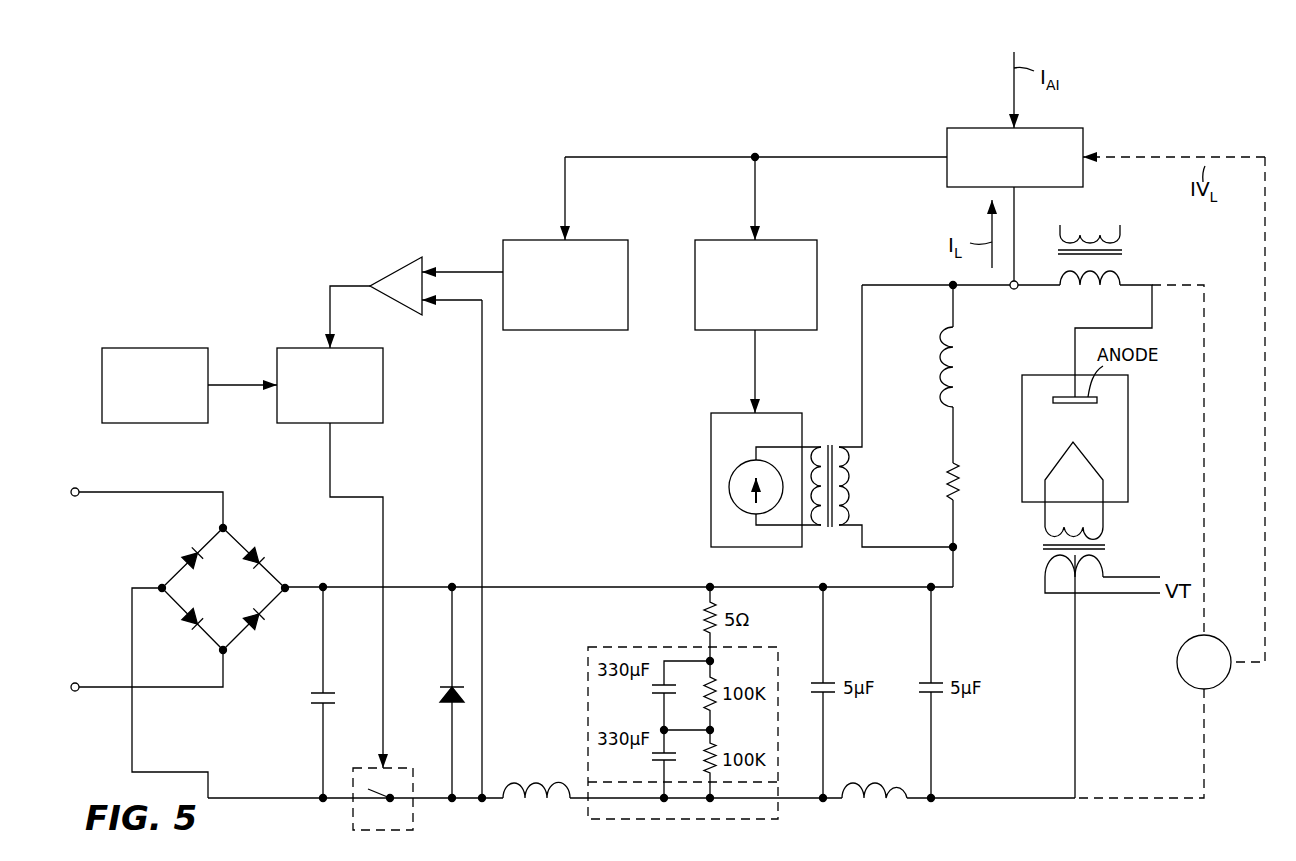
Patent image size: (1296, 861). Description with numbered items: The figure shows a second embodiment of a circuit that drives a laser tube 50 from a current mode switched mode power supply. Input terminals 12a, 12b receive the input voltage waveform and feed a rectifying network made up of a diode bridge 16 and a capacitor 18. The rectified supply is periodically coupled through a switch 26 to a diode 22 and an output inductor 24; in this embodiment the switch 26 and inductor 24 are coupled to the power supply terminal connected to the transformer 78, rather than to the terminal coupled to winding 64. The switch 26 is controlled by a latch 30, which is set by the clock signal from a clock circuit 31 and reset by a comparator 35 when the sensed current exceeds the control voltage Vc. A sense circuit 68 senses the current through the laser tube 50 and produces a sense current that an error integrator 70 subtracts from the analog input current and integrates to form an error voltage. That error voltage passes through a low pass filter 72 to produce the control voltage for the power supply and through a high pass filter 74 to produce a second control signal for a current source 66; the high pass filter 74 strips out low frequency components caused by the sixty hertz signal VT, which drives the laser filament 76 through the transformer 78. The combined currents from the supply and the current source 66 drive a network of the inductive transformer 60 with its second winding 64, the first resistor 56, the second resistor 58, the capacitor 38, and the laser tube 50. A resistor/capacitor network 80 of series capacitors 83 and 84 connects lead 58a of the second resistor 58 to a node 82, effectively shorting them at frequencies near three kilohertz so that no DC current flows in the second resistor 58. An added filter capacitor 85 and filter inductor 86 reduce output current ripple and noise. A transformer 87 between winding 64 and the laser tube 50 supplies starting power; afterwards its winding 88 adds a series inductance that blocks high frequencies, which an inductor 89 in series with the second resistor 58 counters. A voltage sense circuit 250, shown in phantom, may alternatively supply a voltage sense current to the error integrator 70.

The input terminal 12a is at (98, 494).
The input terminal 12b is at (98, 685).
The diode bridge 16 is at (210, 662).
The capacitor 18 is at (308, 699).
The diode 22 is at (438, 697).
The output inductor 24 is at (537, 800).
The switch 26 is at (353, 826).
The latch 30 is at (362, 425).
The clock circuit 31 is at (188, 425).
The comparator 35 is at (393, 274).
The capacitor 38 is at (940, 698).
The laser tube 50 is at (1128, 417).
The first resistor 56 is at (960, 486).
The second resistor 58 is at (700, 615).
The lead 58a is at (716, 662).
The inductive transformer 60 is at (826, 434).
The second winding 64 is at (854, 488).
The current source 66 is at (742, 464).
The sense circuit 68 is at (1013, 291).
The error integrator 70 is at (947, 178).
The low pass filter 72 is at (604, 332).
The high pass filter 74 is at (720, 332).
The laser filament 76 is at (1088, 465).
The transformer 78 is at (1108, 548).
The resistor/capacitor network 80 is at (770, 752).
The node 82 is at (772, 816).
The capacitor 83 is at (646, 700).
The capacitor 84 is at (646, 766).
The filter capacitor 85 is at (832, 696).
The filter inductor 86 is at (872, 800).
The transformer 87 is at (1124, 252).
The winding 88 is at (1091, 283).
The inductor 89 is at (945, 366).
The voltage sense circuit 250 is at (1181, 676).